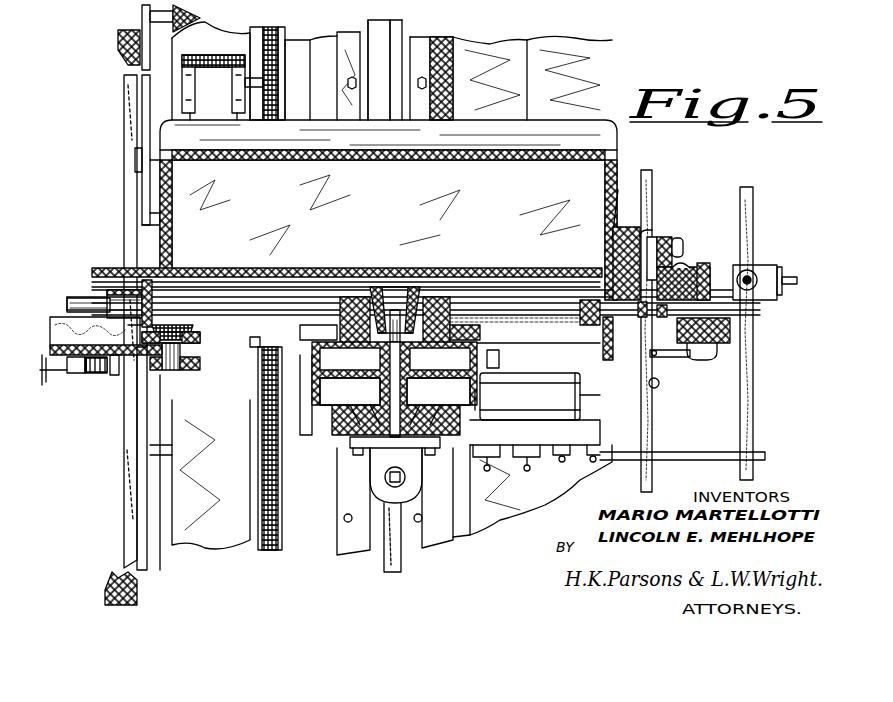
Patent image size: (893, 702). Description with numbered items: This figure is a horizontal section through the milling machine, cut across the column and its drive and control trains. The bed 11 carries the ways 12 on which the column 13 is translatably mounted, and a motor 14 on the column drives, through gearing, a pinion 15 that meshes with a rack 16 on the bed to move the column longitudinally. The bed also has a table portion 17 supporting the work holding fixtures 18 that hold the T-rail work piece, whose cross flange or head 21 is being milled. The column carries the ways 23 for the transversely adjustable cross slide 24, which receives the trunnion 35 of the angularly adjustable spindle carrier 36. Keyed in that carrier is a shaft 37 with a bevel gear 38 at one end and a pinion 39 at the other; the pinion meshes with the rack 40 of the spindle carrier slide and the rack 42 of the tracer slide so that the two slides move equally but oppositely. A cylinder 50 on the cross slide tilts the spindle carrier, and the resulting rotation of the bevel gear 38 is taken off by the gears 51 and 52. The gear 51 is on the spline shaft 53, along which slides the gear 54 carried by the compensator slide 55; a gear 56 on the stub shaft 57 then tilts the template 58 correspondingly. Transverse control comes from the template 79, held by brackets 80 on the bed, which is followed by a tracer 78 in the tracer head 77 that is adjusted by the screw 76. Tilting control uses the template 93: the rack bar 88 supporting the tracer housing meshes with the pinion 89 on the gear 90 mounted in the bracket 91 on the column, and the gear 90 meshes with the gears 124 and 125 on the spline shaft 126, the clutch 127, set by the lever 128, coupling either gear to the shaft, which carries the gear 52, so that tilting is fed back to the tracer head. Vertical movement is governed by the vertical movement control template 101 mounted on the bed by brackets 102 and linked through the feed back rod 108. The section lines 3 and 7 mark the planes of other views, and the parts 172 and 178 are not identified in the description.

The section line 3- 3 is at (62, 310).
The section line 7- 7 is at (822, 280).
The bed 11 is at (490, 528).
The ways 12 is at (208, 29).
The column 13 is at (608, 160).
The motor 14 is at (207, 112).
The pinion 15 is at (278, 84).
The rack 16 is at (272, 30).
The table portion 17 is at (330, 545).
The work holding clamps or fixtures 18 is at (428, 542).
The cross flange or head 21 is at (400, 562).
The ways 23 is at (250, 342).
The cross slide 24 is at (283, 372).
The trunnion 35 is at (425, 364).
The spindle carrier unit 36 is at (305, 410).
The shaft 37 is at (380, 398).
The bevel gear 38 is at (394, 280).
The pinion 39 is at (418, 445).
The rack 40 is at (436, 422).
The rack 42 is at (350, 440).
The cylinder 50 is at (560, 380).
The gear 51 is at (365, 295).
The gear 52 is at (435, 295).
The spline shaft 53 is at (252, 292).
The gear 54 is at (160, 290).
The compensator slide 55 is at (50, 320).
The gear 56 is at (195, 320).
The stub shaft 57 is at (170, 372).
The template 58 is at (200, 366).
The adjusting screw 76 is at (60, 378).
The tracer head 77 is at (84, 378).
The tracer 78 is at (118, 380).
The transverse movement control template 79 is at (128, 520).
The brackets 80 is at (165, 450).
The rack bar 88 is at (650, 229).
The pinion 89 is at (678, 262).
The gear 90 is at (708, 272).
The bracket 91 is at (623, 200).
The template 93 is at (652, 446).
The vertical movement control template 101 is at (754, 400).
The brackets 102 is at (705, 460).
The feed back rod 108 is at (755, 275).
The gear 124 is at (690, 358).
The gear 125 is at (590, 290).
The spline shaft 126 is at (508, 300).
The clutch 127 is at (612, 290).
The clutch shifting lever 128 is at (659, 386).
The bar 172 is at (145, 232).
The bracket 178 is at (150, 22).